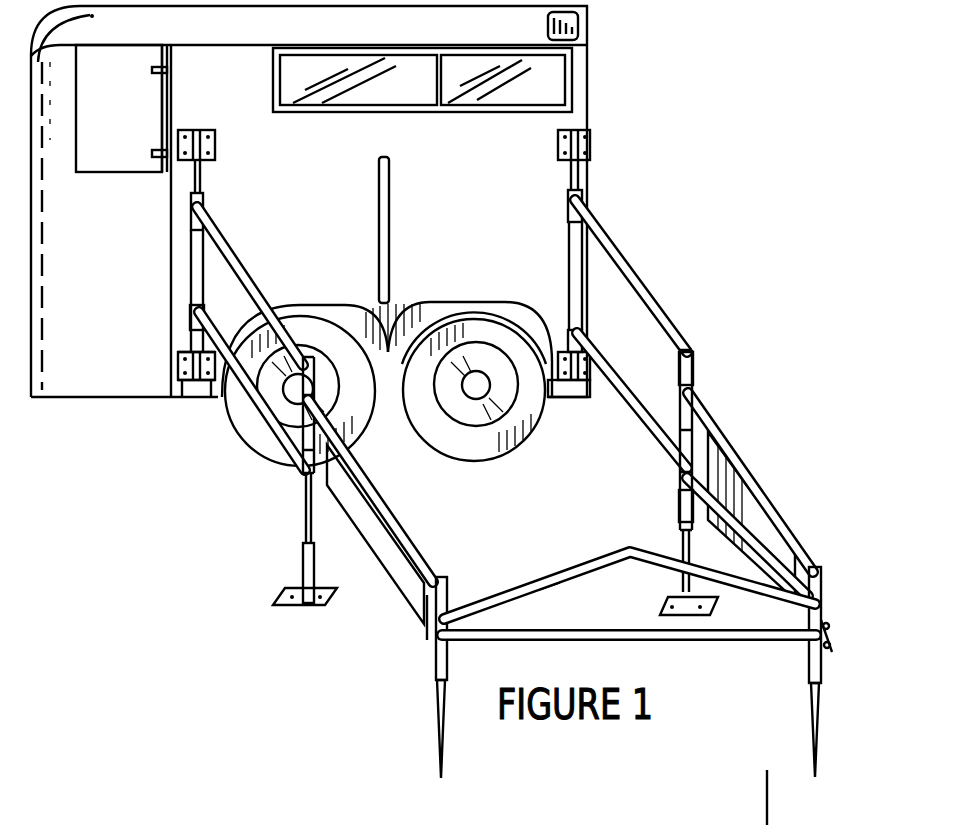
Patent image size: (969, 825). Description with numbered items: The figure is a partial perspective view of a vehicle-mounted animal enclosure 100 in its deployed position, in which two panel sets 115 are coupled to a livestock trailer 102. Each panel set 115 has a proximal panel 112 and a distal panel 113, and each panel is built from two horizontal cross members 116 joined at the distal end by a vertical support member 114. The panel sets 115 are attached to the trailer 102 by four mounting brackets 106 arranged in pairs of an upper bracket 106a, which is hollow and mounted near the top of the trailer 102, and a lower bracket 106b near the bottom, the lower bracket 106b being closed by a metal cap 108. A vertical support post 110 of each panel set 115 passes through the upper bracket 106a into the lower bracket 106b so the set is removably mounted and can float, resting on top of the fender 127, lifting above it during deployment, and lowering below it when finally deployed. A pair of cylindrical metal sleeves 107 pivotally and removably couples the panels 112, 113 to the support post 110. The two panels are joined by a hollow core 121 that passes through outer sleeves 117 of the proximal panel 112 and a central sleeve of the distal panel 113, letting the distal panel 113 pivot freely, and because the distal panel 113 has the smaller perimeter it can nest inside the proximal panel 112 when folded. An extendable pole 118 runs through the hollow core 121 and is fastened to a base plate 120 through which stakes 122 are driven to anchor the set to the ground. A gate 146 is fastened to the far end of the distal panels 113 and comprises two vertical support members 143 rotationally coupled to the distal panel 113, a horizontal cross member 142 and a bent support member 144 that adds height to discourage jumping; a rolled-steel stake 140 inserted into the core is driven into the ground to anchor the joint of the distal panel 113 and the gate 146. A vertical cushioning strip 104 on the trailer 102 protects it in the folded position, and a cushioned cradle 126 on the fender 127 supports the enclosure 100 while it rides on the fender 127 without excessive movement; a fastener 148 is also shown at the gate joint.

The vehicle-mounted animal enclosure 100 is at (745, 399).
The livestock trailer 102 is at (587, 60).
The cushioning strip 104 is at (390, 166).
The mounting bracket 106 is at (178, 366).
The upper bracket 106a is at (205, 122).
The lower bracket 106b is at (184, 356).
The cylindrical metal sleeve 107 is at (190, 210).
The metal cap 108 is at (190, 397).
The vertical support post 110 is at (203, 178).
The proximal panel 112 is at (236, 264).
The distal panel 113 is at (395, 510).
The vertical support member 114 is at (190, 266).
The panel set 115 is at (178, 480).
The horizontal cross member 116 is at (652, 318).
The outer sleeve 117 is at (693, 368).
The extendable pole 118 is at (303, 531).
The base plate 120 is at (311, 610).
The hollow core 121 is at (690, 350).
The stake 122 is at (290, 593).
The cushioned cradle 126 is at (394, 294).
The fender 127 is at (333, 304).
The stake 140 is at (822, 718).
The horizontal cross member 142 is at (598, 640).
The vertical support member 143 is at (447, 632).
The bent support member 144 is at (588, 570).
The gate 146 is at (556, 562).
The clamp 148 is at (832, 640).